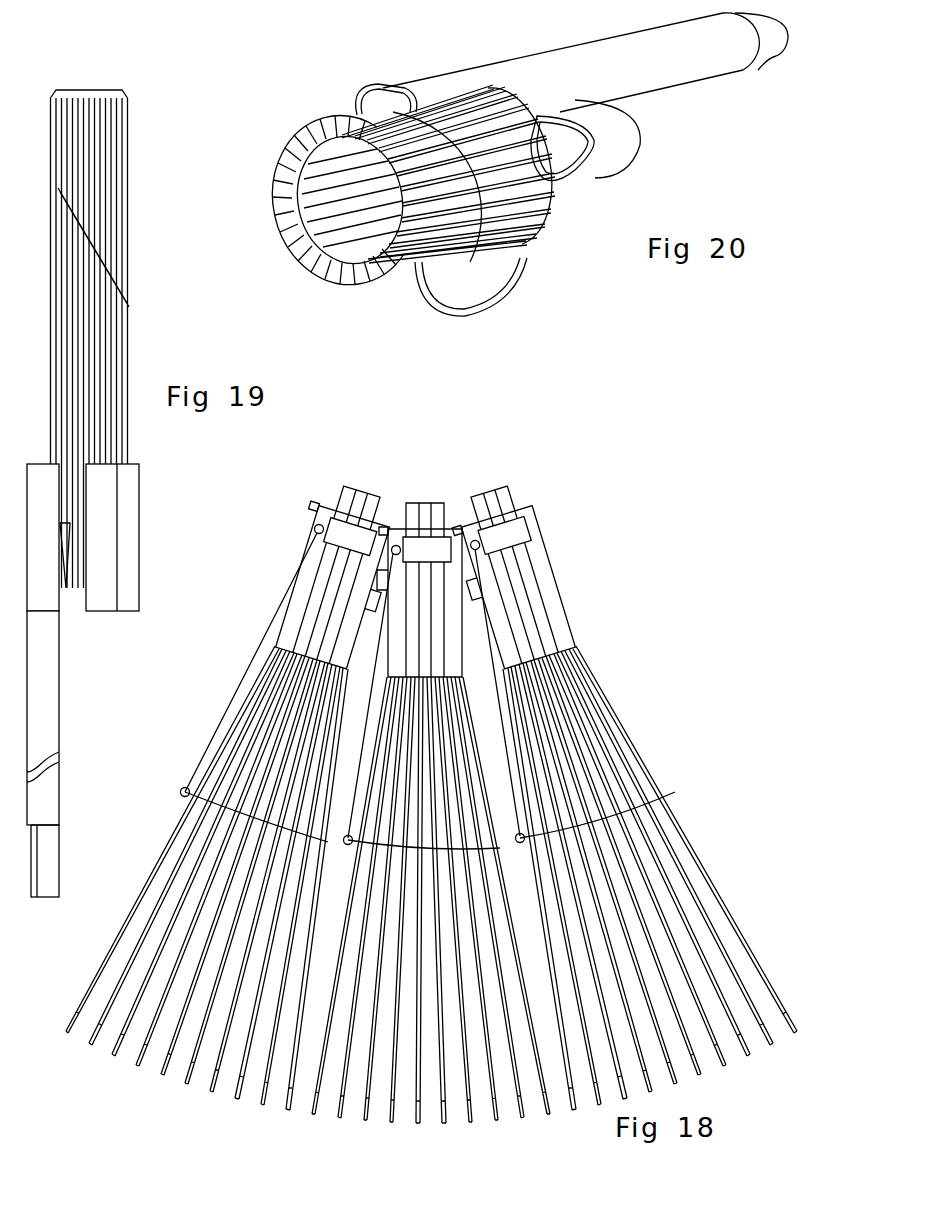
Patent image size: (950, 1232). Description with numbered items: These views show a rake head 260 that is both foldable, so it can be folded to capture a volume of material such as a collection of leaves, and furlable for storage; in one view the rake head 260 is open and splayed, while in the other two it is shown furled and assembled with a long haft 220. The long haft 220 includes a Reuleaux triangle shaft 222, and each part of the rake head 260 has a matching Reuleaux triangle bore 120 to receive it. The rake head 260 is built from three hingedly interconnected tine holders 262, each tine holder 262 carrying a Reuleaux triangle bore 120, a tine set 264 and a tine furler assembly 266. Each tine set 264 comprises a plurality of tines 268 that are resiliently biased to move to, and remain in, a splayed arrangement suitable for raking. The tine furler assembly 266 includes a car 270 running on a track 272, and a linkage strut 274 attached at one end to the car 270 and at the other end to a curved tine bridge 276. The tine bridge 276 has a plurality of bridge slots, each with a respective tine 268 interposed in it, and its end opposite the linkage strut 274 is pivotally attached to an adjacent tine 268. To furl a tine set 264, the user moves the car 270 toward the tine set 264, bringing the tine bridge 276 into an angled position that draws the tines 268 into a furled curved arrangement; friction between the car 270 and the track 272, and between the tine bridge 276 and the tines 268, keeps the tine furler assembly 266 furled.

In FIG. 19, the rake head 260 is at (140, 87).
In FIG. 20, the rake head 260 is at (370, 67).
In FIG. 18, the rake head 260 is at (668, 761).
In FIG. 18, the tine holder 262 is at (565, 597).
In FIG. 18, the tine set 264 is at (149, 1078).
In FIG. 18, the tine furler assembly 266 is at (278, 581).
In FIG. 18, the tine 268 is at (717, 875).
In FIG. 18, the car 270 is at (518, 538).
In FIG. 18, the track 272 is at (514, 493).
In FIG. 18, the linkage strut 274 is at (316, 526).
In FIG. 19, the tine bridge 276 is at (108, 268).
In FIG. 20, the tine bridge 276 is at (533, 217).
In FIG. 18, the tine bridge 276 is at (603, 827).
In FIG. 19, the long haft 220 is at (62, 641).
In FIG. 20, the long haft 220 is at (693, 91).
In FIG. 19, the Reuleaux triangle shaft 222 is at (45, 668).
In FIG. 20, the Reuleaux triangle shaft 222 is at (657, 77).
In FIG. 20, the Reuleaux triangle bore 120 is at (565, 147).